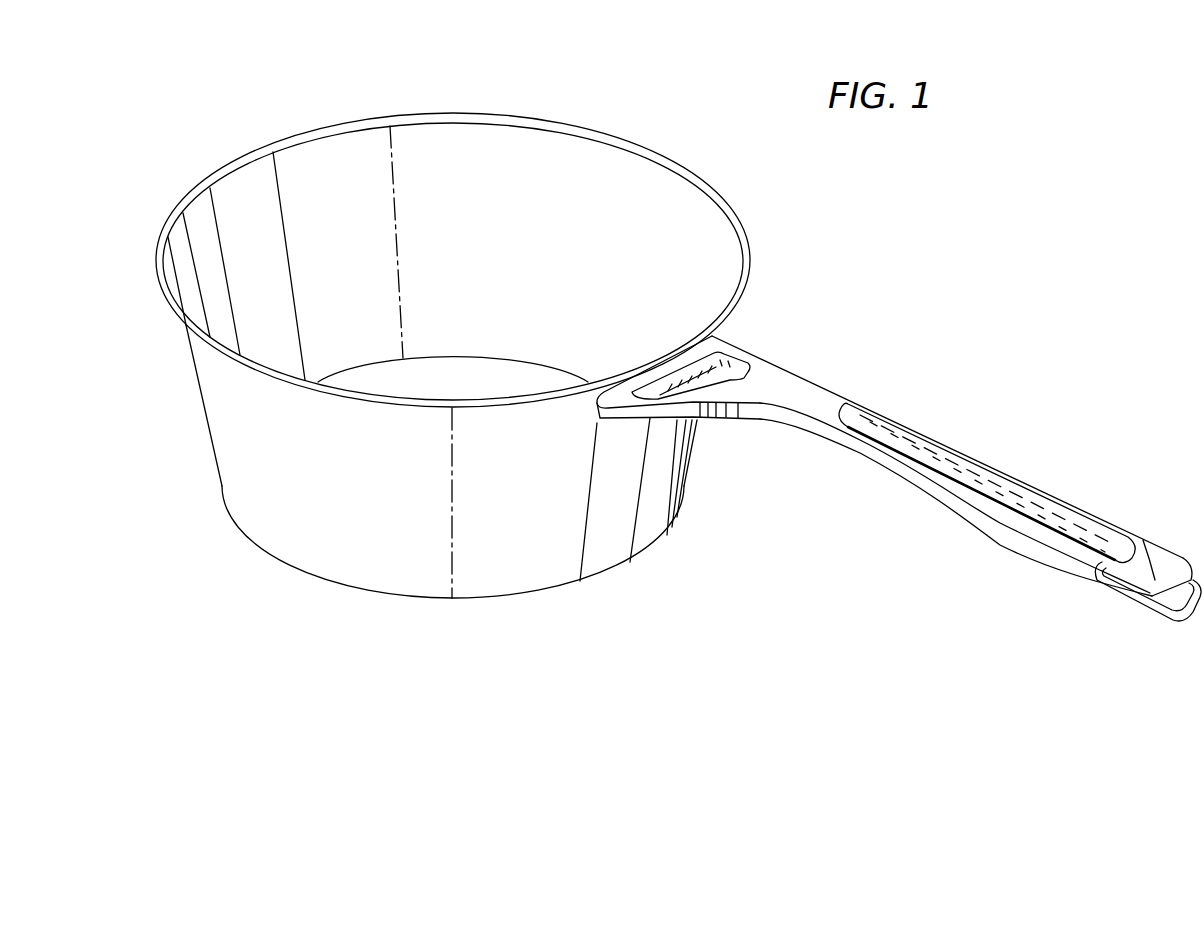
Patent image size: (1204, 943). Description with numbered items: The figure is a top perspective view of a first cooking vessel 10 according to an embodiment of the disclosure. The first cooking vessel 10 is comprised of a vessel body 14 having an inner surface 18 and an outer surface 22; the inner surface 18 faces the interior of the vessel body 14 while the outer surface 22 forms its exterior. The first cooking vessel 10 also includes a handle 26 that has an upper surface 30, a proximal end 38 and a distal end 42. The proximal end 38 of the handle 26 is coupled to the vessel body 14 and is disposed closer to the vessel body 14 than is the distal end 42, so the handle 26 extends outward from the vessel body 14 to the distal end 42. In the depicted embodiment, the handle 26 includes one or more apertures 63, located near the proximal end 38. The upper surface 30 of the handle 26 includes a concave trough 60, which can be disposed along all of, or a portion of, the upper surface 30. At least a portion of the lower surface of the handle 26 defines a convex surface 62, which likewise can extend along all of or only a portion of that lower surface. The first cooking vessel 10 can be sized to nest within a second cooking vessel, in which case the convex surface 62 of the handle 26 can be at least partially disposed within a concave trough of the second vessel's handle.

The first cooking vessel 10 is at (937, 298).
The vessel body 14 is at (280, 513).
The inner surface 18 is at (480, 188).
The outer surface 22 is at (523, 522).
The handle 26 is at (938, 582).
The upper surface 30 is at (820, 398).
The proximal end 38 is at (763, 373).
The distal end 42 is at (1167, 567).
The concave trough 60 is at (1030, 487).
The convex surface 62 is at (1020, 547).
The apertures 63 is at (735, 362).